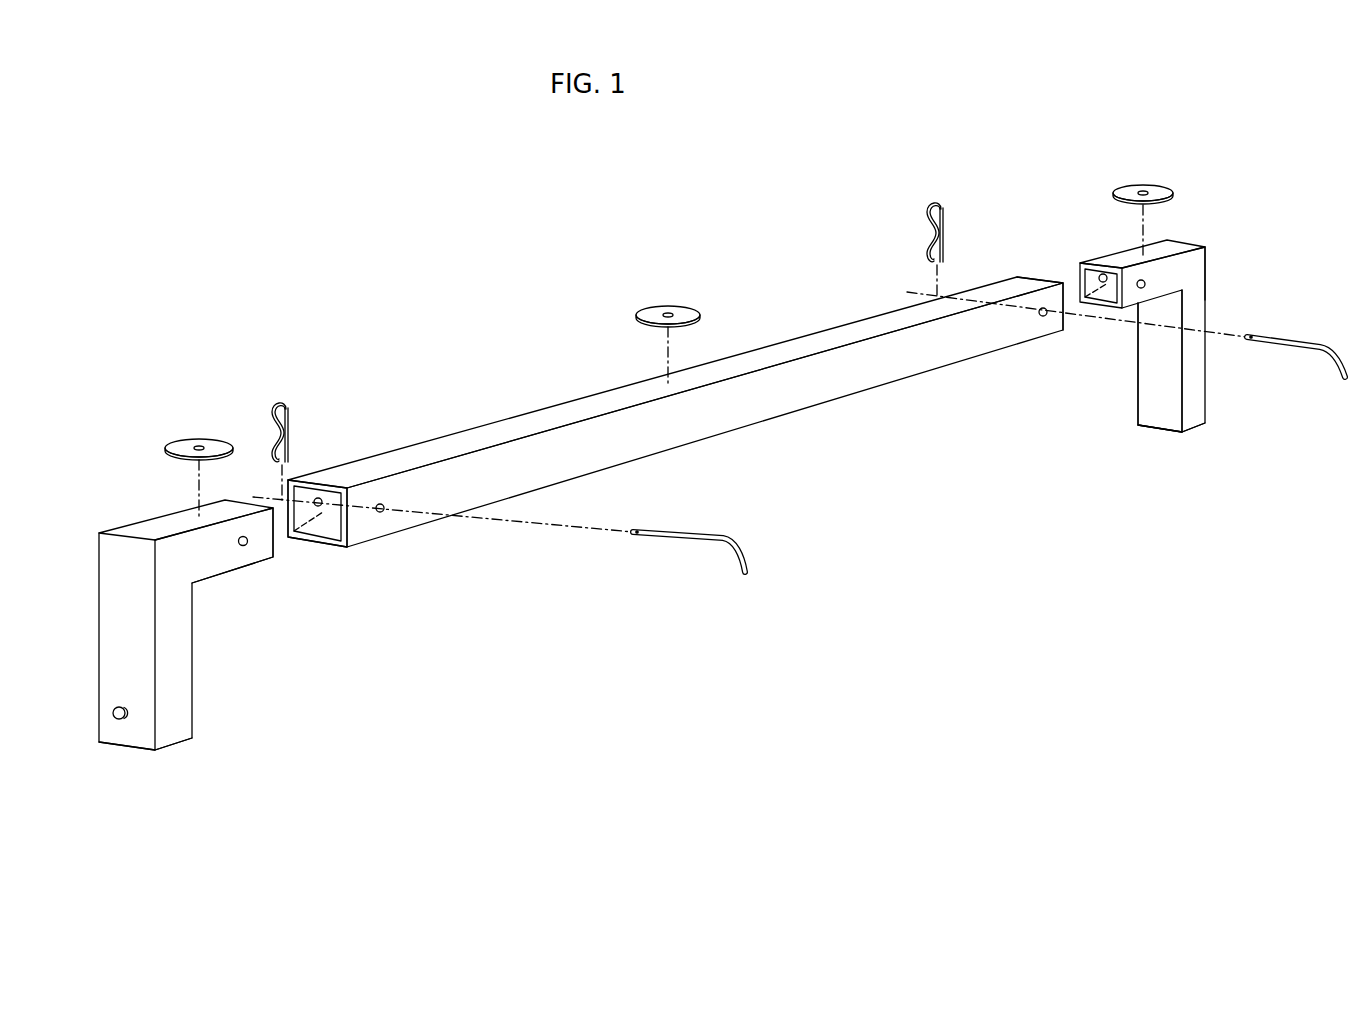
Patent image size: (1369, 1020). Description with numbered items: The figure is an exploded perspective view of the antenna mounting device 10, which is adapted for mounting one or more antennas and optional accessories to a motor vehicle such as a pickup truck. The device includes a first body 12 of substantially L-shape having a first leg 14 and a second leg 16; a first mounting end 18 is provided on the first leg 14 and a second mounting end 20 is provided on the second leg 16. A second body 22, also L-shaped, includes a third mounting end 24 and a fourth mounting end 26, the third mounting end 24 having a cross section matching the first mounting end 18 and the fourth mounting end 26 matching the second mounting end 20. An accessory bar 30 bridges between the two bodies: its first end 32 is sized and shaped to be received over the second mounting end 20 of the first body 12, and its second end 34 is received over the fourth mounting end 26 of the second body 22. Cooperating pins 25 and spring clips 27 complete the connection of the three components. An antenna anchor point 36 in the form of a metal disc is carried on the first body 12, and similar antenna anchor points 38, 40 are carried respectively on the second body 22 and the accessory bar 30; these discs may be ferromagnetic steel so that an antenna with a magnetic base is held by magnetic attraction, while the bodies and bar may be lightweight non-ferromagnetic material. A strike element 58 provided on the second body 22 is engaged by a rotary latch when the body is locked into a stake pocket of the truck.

The antenna mounting device 10 is at (457, 245).
The first body 12 is at (1203, 248).
The first leg 14 is at (1148, 355).
The second leg 16 is at (1177, 272).
The first mounting end 18 is at (1190, 430).
The second mounting end 20 is at (1092, 262).
The second body 22 is at (128, 525).
The third mounting end 24 is at (155, 748).
The pin 25 is at (683, 543).
The fourth mounting end 26 is at (288, 548).
The spring clip 27 is at (288, 412).
The accessory bar 30 is at (568, 403).
The first end 32 is at (1042, 280).
The second end 34 is at (312, 490).
The antenna anchor point 36 is at (1162, 185).
The antenna anchor point 38 is at (183, 437).
The antenna anchor point 40 is at (650, 305).
The strike element 58 is at (120, 722).